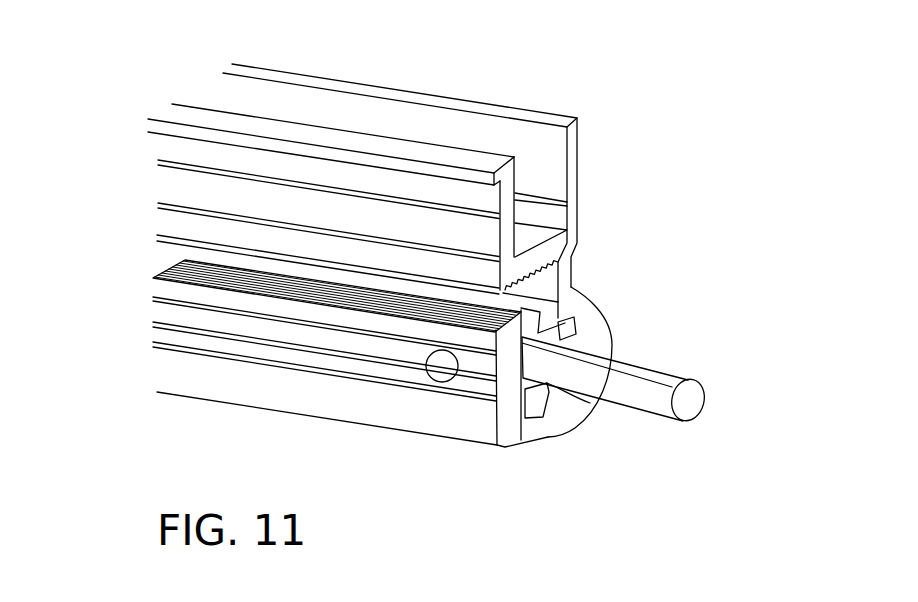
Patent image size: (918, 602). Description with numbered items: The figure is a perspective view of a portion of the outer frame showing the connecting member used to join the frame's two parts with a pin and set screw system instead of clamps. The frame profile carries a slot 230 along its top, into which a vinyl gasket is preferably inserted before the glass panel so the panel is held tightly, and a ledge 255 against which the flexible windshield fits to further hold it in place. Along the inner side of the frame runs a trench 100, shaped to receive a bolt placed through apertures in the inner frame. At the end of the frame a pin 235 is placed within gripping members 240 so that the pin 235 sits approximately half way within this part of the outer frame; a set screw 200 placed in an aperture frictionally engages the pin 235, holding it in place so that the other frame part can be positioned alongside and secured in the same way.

The trench 100 is at (540, 285).
The set screw 200 is at (433, 382).
The slot 230 is at (530, 140).
The pin 235 is at (660, 375).
The gripping member 240 is at (572, 338).
The ledge 255 is at (433, 152).